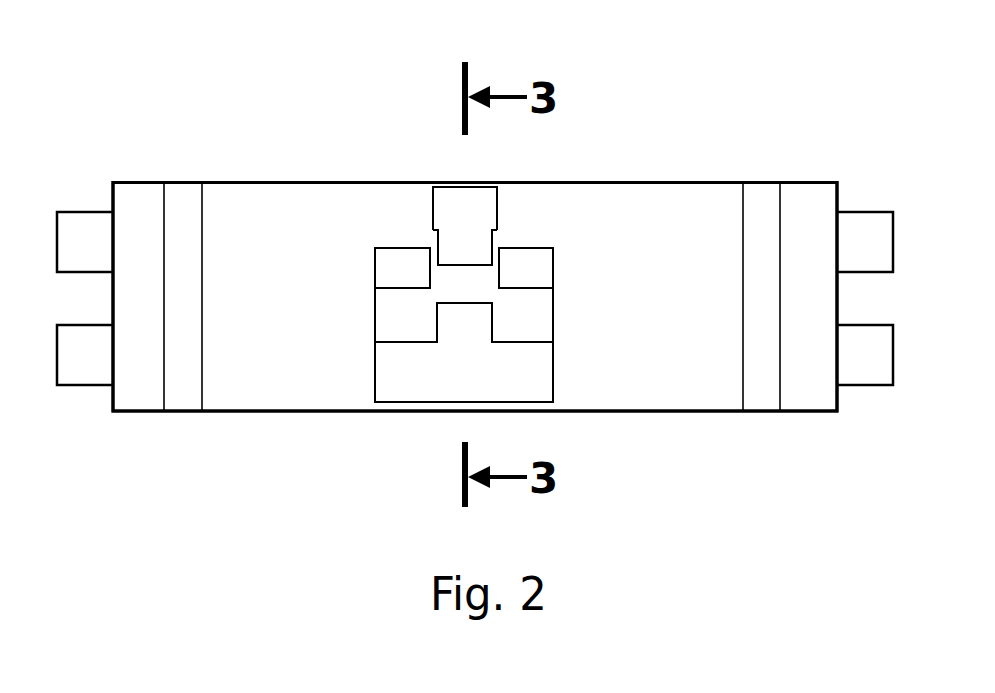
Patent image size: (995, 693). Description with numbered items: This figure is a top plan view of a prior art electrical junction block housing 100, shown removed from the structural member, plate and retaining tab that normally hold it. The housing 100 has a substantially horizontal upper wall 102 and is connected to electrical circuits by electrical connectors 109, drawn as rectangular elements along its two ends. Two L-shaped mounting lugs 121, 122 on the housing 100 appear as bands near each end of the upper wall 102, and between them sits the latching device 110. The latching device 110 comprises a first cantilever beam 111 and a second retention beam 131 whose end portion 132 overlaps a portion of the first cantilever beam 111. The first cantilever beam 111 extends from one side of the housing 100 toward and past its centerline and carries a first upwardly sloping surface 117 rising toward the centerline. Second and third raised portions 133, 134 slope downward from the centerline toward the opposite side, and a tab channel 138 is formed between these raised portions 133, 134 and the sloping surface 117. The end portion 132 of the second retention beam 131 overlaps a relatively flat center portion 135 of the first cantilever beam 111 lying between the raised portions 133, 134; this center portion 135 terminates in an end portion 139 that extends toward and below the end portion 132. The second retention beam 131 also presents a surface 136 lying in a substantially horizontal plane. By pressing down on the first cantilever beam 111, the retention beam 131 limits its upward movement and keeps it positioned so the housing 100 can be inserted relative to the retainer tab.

The junction block housing 100 is at (662, 453).
The upper wall 102 is at (673, 195).
The electrical connectors 109 is at (77, 228).
The latching device 110 is at (433, 251).
The first cantilever beam 111 is at (448, 383).
The first upwardly sloping surface 117 is at (475, 330).
The mounting lug 121 is at (175, 197).
The mounting lug 122 is at (765, 190).
The second retention beam 131 is at (457, 203).
The end portion 132 is at (482, 258).
The second raised portion 133 is at (395, 272).
The third raised portion 134 is at (547, 264).
The center portion 135 is at (448, 285).
The surface 136 is at (478, 223).
The tab channel 138 is at (435, 295).
The end portion 139 is at (475, 275).